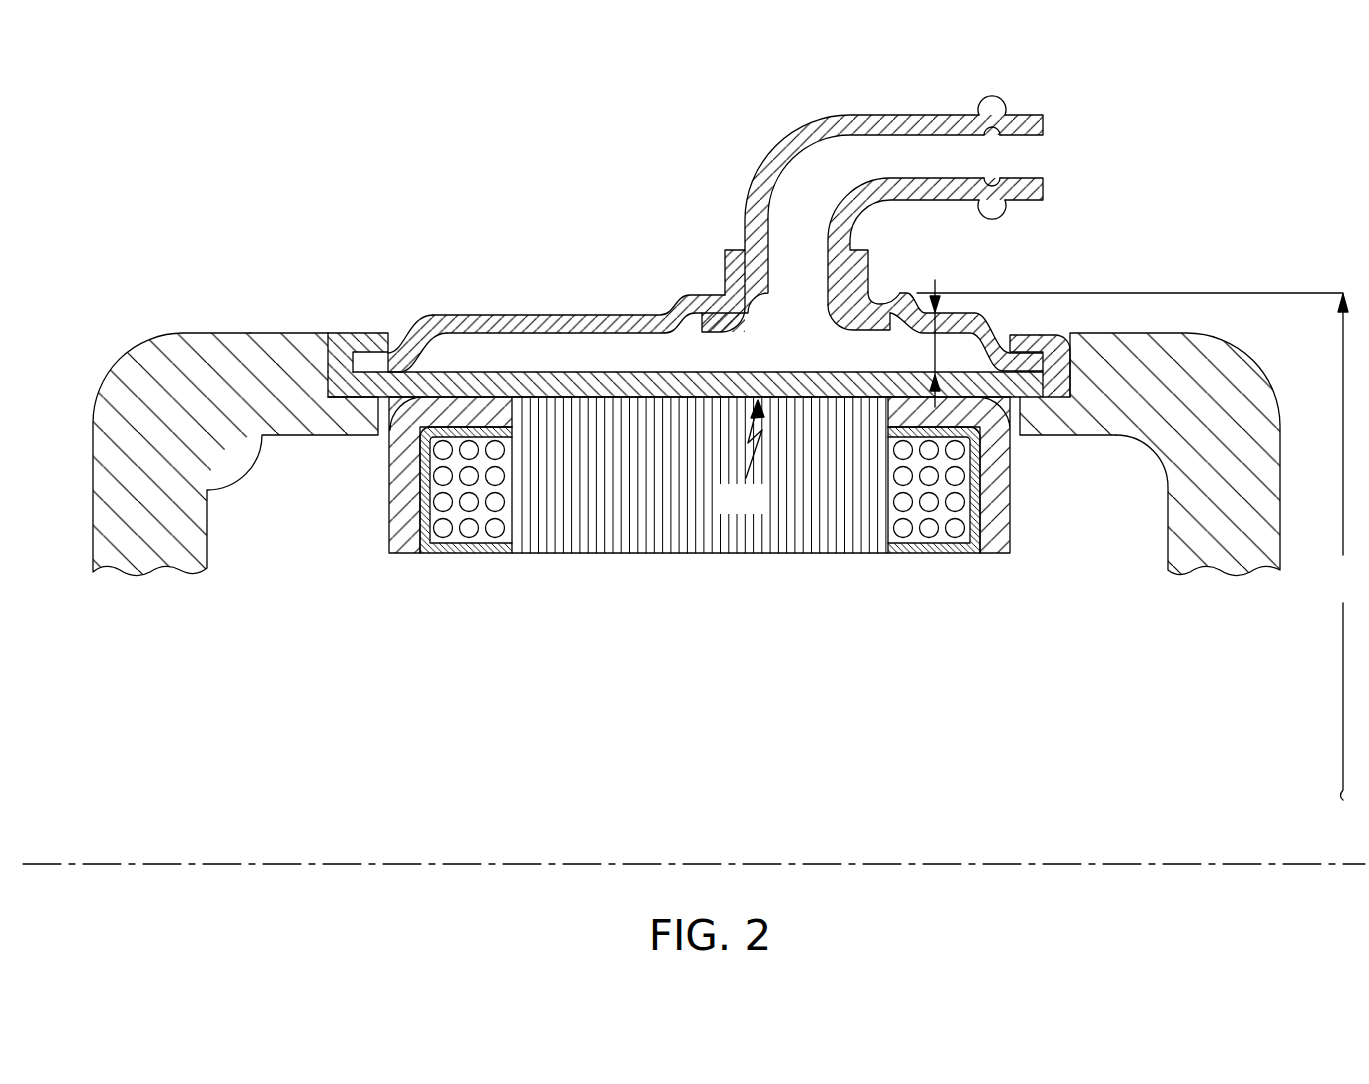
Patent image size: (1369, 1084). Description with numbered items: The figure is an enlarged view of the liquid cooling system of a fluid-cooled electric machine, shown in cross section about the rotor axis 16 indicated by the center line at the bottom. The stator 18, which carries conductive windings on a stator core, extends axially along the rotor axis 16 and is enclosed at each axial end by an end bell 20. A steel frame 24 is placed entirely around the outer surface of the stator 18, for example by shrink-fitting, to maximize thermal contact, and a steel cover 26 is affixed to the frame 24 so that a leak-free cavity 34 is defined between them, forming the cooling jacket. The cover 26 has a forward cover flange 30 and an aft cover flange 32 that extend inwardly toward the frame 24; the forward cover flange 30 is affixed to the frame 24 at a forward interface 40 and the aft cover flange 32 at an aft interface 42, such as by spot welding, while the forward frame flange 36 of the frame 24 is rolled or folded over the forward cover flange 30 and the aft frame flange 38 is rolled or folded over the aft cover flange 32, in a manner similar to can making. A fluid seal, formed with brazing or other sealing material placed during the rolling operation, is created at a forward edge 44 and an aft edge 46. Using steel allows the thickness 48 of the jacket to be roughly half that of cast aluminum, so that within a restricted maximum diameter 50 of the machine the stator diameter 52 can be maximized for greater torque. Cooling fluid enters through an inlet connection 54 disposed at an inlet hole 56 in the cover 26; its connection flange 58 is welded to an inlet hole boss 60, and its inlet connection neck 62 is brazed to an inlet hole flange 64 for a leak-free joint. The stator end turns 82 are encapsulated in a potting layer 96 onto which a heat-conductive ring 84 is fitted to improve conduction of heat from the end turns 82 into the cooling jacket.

The rotor axis 16 is at (338, 863).
The stator 18 is at (653, 516).
The end bell 20 is at (671, 435).
The frame 24 is at (684, 333).
The cover 26 is at (559, 303).
The forward cover flange 30 is at (455, 311).
The aft cover flange 32 is at (956, 313).
The cavity 34 is at (628, 338).
The forward frame flange 36 is at (318, 350).
The aft frame flange 38 is at (1058, 345).
The forward interface 40 is at (362, 356).
The aft interface 42 is at (1031, 432).
The forward edge 44 is at (393, 346).
The aft edge 46 is at (1052, 322).
The thickness 48 is at (928, 346).
The maximum diameter 50 is at (1138, 546).
The stator diameter 52 is at (742, 457).
The inlet connection 54 is at (863, 212).
The inlet hole 56 is at (910, 274).
The connection flange 58 is at (858, 331).
The inlet hole boss 60 is at (881, 300).
The inlet connection neck 62 is at (752, 214).
The inlet hole flange 64 is at (722, 268).
The stator end turns 82 is at (467, 537).
The ring 84 is at (395, 480).
The potting layer 96 is at (496, 532).